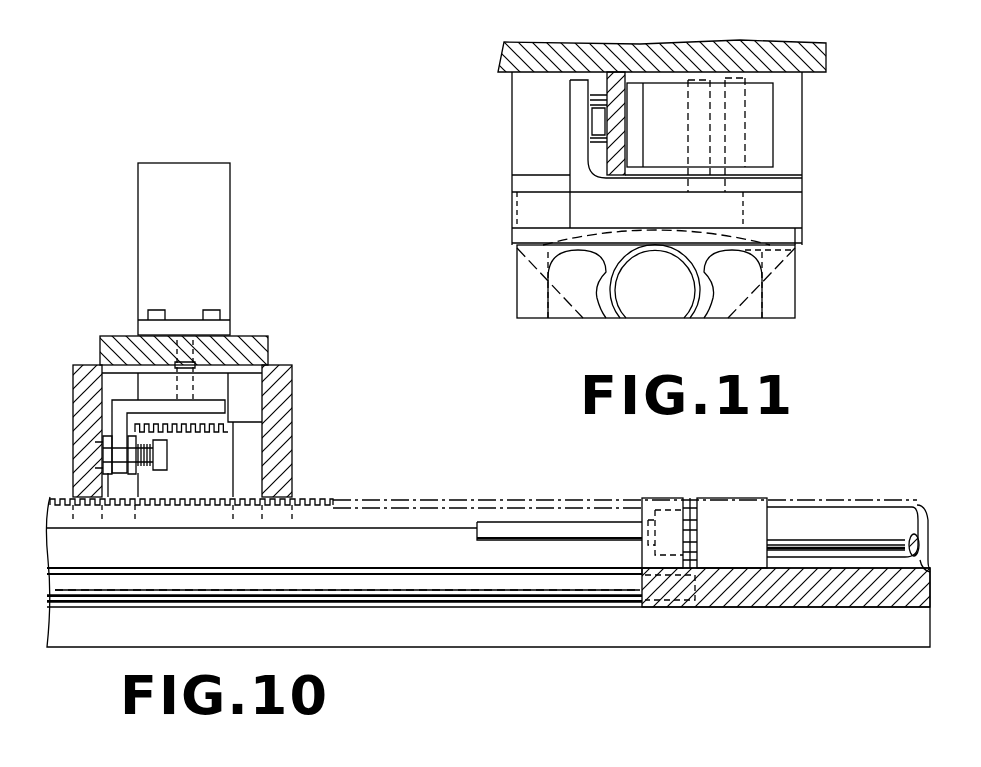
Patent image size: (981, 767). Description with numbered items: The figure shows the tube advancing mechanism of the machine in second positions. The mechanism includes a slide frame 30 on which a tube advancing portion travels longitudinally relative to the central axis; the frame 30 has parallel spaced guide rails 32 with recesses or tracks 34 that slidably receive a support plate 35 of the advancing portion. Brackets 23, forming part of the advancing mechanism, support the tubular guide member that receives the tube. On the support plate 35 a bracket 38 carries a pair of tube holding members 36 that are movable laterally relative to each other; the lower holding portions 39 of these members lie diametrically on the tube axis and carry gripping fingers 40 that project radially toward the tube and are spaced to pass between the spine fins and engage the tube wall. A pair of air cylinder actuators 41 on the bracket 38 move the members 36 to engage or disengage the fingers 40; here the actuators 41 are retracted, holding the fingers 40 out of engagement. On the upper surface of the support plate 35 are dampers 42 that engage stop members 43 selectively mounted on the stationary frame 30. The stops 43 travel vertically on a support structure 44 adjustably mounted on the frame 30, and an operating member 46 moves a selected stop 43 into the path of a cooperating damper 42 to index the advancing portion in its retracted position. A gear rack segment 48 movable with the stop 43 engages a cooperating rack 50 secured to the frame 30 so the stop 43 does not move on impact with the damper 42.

In FIG. 11, the bracket 23 is at (512, 104).
In FIG. 10, the slide frame 30 is at (922, 510).
In FIG. 10, the guide rail 32 is at (555, 635).
In FIG. 10, the track 34 is at (370, 606).
In FIG. 10, the support plate 35 is at (826, 607).
In FIG. 11, the support plate 35 is at (722, 56).
In FIG. 11, the tube holding member 36 is at (672, 222).
In FIG. 11, the bracket 38 is at (613, 78).
In FIG. 11, the holding portion 39 is at (786, 289).
In FIG. 11, the gripping finger 40 is at (560, 316).
In FIG. 11, the actuator 41 is at (758, 139).
In FIG. 10, the damper 42 is at (838, 522).
In FIG. 10, the stop member 43 is at (167, 458).
In FIG. 10, the support structure 44 is at (80, 394).
In FIG. 10, the operating member 46 is at (218, 283).
In FIG. 10, the gear rack segment 48 is at (205, 433).
In FIG. 10, the rack 50 is at (320, 500).